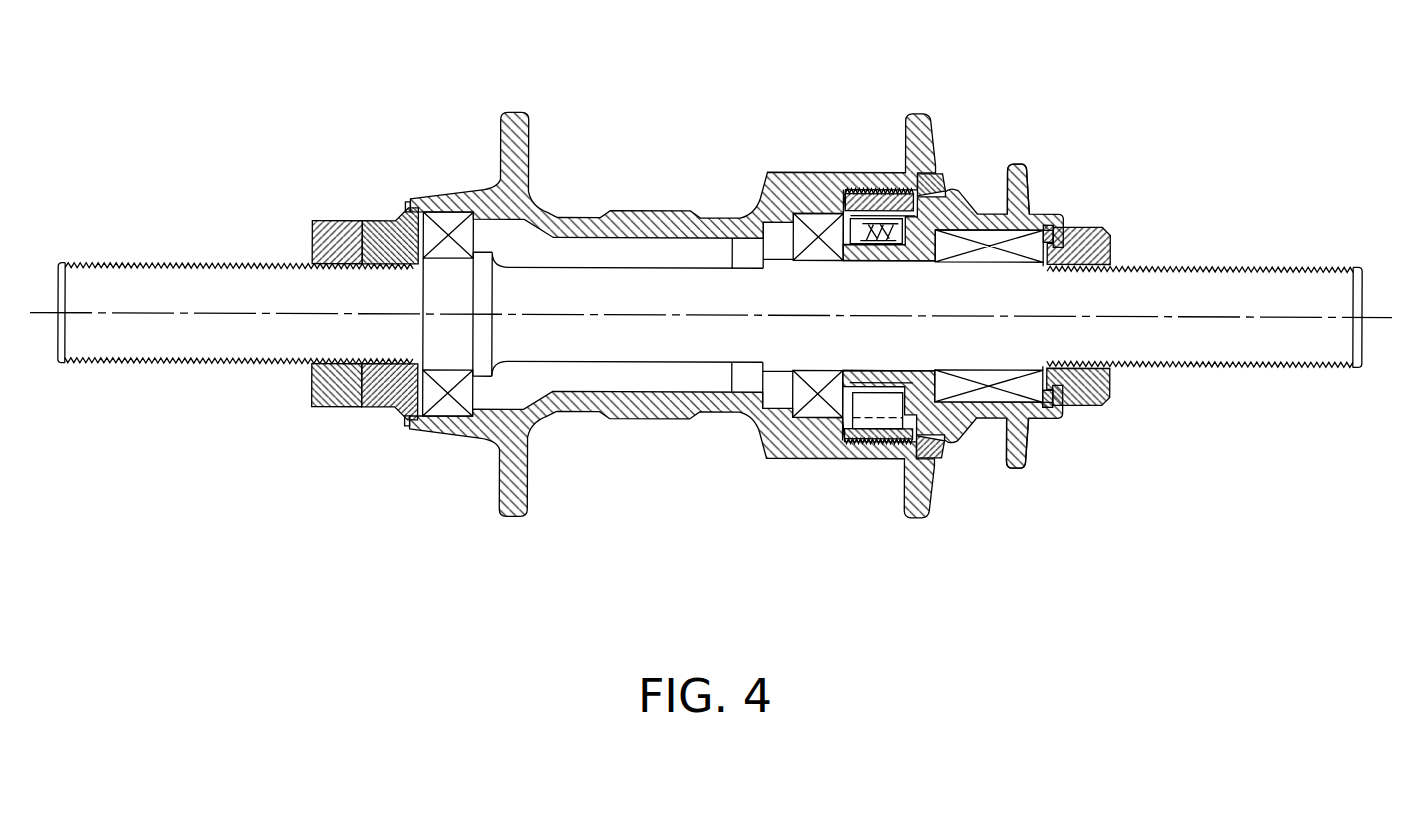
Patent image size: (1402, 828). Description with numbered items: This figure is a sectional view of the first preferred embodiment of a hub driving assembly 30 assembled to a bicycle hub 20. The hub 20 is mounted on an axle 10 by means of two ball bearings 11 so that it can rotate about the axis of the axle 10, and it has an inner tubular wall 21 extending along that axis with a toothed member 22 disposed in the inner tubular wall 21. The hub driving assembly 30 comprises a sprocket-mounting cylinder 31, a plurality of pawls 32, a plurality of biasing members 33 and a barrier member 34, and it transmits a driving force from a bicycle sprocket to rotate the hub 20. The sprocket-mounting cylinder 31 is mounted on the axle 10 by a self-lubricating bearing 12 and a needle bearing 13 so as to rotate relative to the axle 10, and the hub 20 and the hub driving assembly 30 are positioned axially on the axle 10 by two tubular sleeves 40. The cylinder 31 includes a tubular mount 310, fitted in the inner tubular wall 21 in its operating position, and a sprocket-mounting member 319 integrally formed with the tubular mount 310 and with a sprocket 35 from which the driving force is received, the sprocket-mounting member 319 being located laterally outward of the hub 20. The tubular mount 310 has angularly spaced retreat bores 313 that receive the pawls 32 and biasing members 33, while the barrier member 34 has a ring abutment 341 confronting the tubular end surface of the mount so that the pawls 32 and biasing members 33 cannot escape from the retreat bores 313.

The axle 10 is at (161, 252).
The ball bearings 11 is at (442, 212).
The self-lubricating bearing 12 is at (948, 193).
The needle bearing 13 is at (990, 236).
The hub 20 is at (632, 207).
The inner tubular wall 21 is at (836, 220).
The toothed member 22 is at (887, 192).
The hub driving assembly 30 is at (1043, 143).
The sprocket-mounting cylinder 31 is at (963, 420).
The tubular mount 310 is at (928, 458).
The retreat bores 313 is at (901, 444).
The sprocket-mounting member 319 is at (1047, 406).
The pawls 32 is at (876, 402).
The biasing members 33 is at (878, 222).
The barrier member 34 is at (794, 214).
The ring abutment 341 is at (808, 412).
The sprocket 35 is at (1010, 470).
The tubular sleeves 40 is at (386, 212).